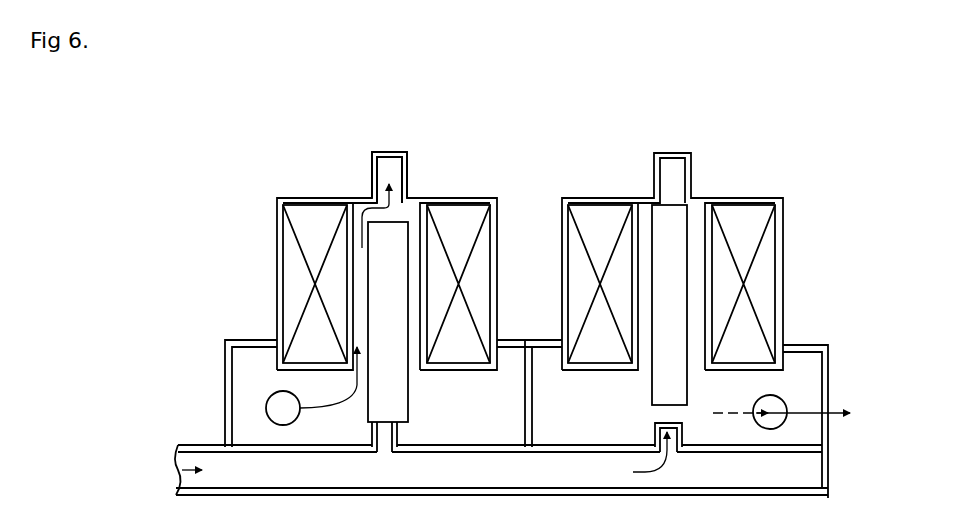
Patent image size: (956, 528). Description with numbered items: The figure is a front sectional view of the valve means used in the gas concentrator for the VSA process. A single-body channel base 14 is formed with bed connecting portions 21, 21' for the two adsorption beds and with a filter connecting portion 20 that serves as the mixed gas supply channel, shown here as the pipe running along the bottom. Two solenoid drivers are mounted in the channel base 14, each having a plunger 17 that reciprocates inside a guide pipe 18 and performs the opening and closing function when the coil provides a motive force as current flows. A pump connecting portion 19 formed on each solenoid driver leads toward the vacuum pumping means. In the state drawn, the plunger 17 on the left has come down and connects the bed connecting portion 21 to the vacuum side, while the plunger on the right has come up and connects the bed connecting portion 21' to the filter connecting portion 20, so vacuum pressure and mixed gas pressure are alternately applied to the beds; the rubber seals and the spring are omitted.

The channel base 14 is at (783, 267).
The plunger 17 is at (398, 222).
The guide pipe 18 is at (320, 198).
The pump connecting portion 19 is at (388, 160).
The filter connecting portion 20 is at (180, 458).
The bed connecting portion 21 is at (269, 386).
The bed connecting portion 21' is at (797, 427).